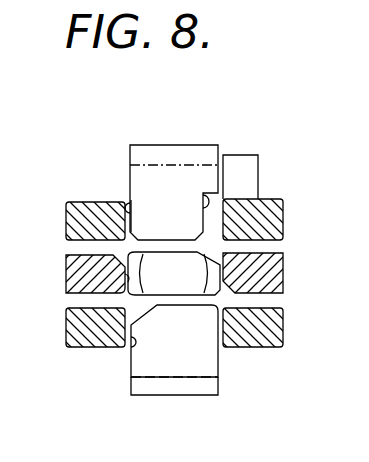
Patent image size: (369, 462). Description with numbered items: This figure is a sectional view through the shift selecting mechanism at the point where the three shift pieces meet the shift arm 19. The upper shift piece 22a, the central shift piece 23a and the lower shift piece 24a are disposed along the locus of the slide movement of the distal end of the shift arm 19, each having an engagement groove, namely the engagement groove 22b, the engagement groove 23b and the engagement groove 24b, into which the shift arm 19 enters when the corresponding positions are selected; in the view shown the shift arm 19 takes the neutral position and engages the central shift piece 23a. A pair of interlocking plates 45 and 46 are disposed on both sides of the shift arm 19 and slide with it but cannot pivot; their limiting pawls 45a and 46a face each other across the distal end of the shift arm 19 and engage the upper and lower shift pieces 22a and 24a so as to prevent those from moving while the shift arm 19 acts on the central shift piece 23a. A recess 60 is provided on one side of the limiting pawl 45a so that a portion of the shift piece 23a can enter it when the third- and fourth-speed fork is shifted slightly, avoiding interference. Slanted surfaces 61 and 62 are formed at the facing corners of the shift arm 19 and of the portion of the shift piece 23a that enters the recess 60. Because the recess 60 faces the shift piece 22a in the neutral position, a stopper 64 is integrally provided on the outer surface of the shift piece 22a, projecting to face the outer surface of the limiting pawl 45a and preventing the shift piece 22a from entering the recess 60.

The interlocking plate 45 is at (178, 145).
The recess 60 is at (194, 188).
The limiting pawl 45a is at (178, 218).
The stopper 64 is at (250, 183).
The shift piece 22a is at (283, 212).
The engagement groove 22b is at (128, 202).
The slanted surface 61 is at (228, 251).
The shift piece 23a is at (283, 262).
The engagement groove 23b is at (125, 290).
The shift arm 19 is at (180, 286).
The slanted surface 62 is at (228, 291).
The shift piece 24a is at (283, 335).
The engagement groove 24b is at (132, 347).
The limiting pawl 46a is at (195, 349).
The interlocking plate 46 is at (198, 396).